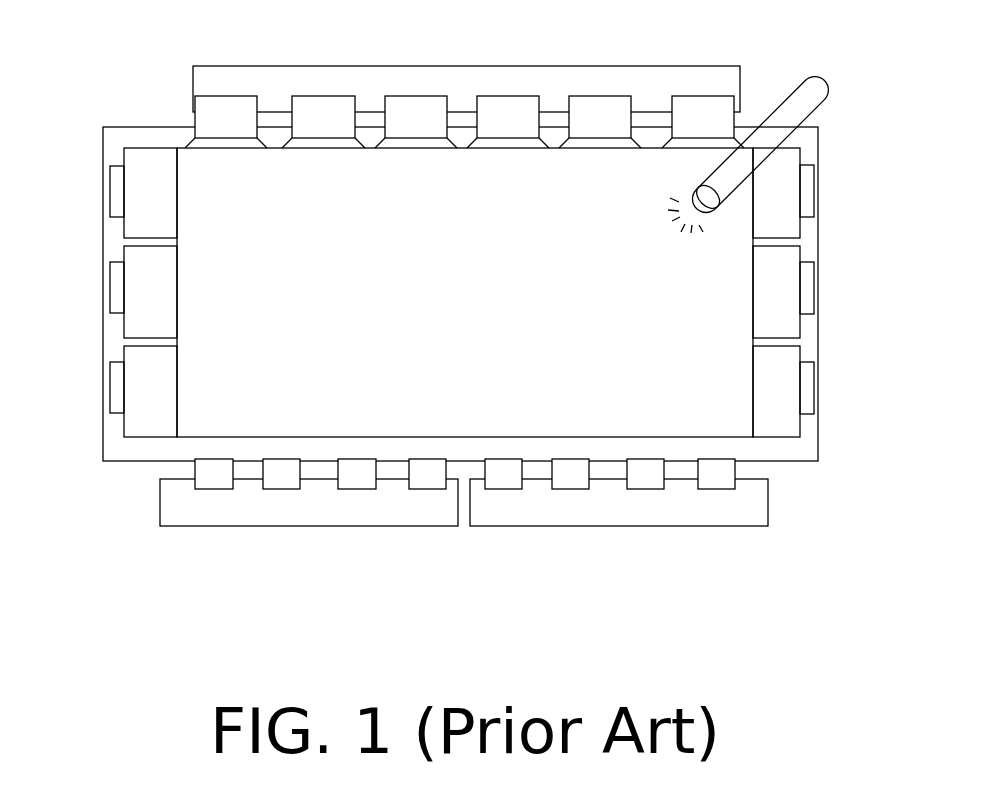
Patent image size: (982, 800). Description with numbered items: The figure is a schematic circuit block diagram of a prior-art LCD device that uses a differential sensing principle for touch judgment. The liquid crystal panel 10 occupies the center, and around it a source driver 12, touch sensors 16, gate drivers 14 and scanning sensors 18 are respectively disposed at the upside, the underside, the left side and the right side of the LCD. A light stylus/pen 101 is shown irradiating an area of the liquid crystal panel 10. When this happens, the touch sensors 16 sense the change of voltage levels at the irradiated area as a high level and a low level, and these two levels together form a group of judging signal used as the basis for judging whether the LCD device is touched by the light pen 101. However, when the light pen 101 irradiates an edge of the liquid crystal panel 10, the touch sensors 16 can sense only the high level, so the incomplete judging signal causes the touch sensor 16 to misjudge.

The liquid crystal panel 10 is at (460, 160).
The source driver 12 is at (565, 78).
The gate drivers 14 is at (118, 190).
The touch sensors 16 is at (309, 517).
The scanning sensors 18 is at (810, 192).
The light stylus/pen 101 is at (816, 80).